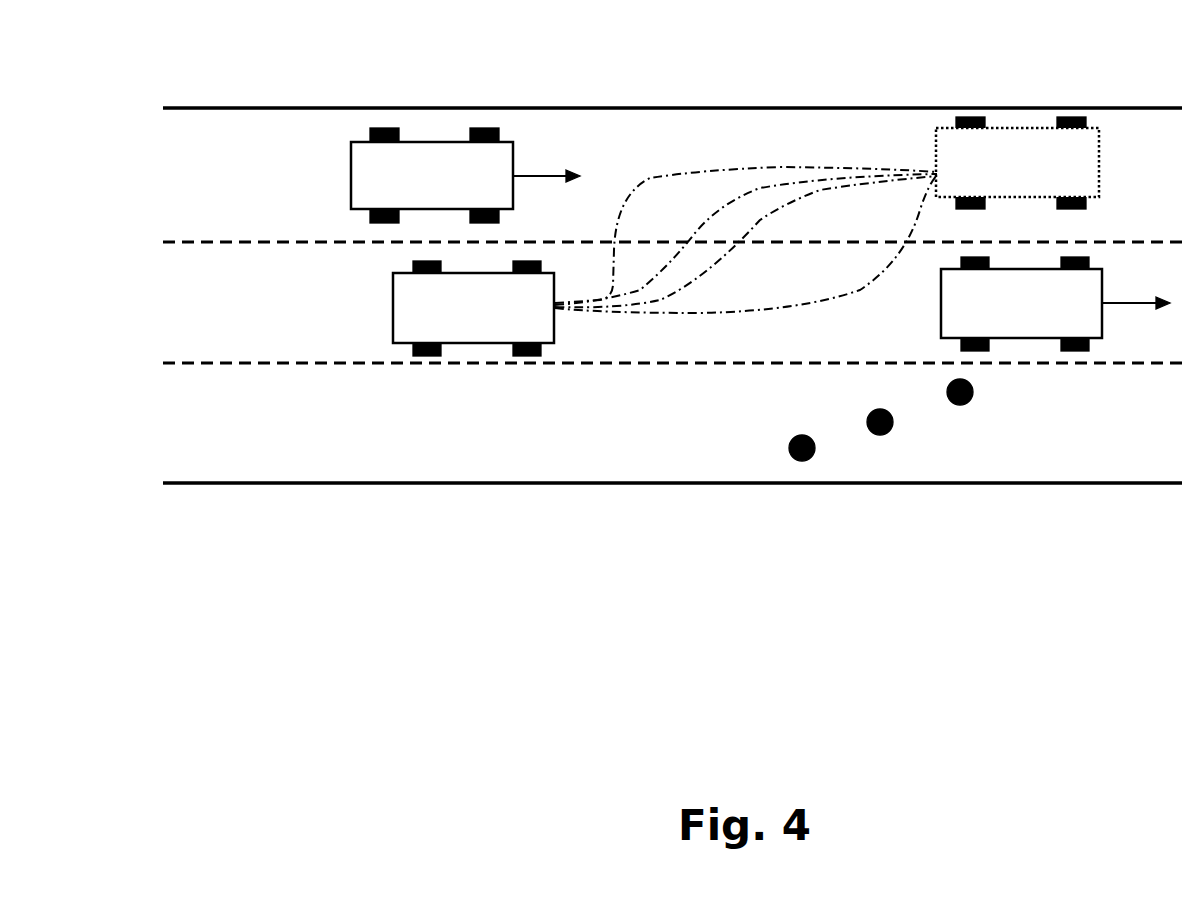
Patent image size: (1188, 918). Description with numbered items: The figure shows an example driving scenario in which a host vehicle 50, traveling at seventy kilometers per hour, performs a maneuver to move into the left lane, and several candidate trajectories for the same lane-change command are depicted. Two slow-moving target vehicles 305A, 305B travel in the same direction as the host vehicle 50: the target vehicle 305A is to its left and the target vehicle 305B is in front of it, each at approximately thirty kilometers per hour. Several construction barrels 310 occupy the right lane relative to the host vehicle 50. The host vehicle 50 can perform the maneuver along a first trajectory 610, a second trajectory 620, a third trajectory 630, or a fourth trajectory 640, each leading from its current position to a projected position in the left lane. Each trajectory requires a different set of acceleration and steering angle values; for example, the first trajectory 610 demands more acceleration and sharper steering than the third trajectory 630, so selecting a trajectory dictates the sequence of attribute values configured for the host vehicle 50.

The host vehicle 50 is at (1033, 177).
The target vehicle 305A is at (462, 182).
The target vehicle 305B is at (1053, 321).
The construction barrels 310 is at (916, 530).
The first trajectory 610 is at (653, 180).
The second trajectory 620 is at (720, 205).
The third trajectory 630 is at (790, 202).
The fourth trajectory 640 is at (922, 207).